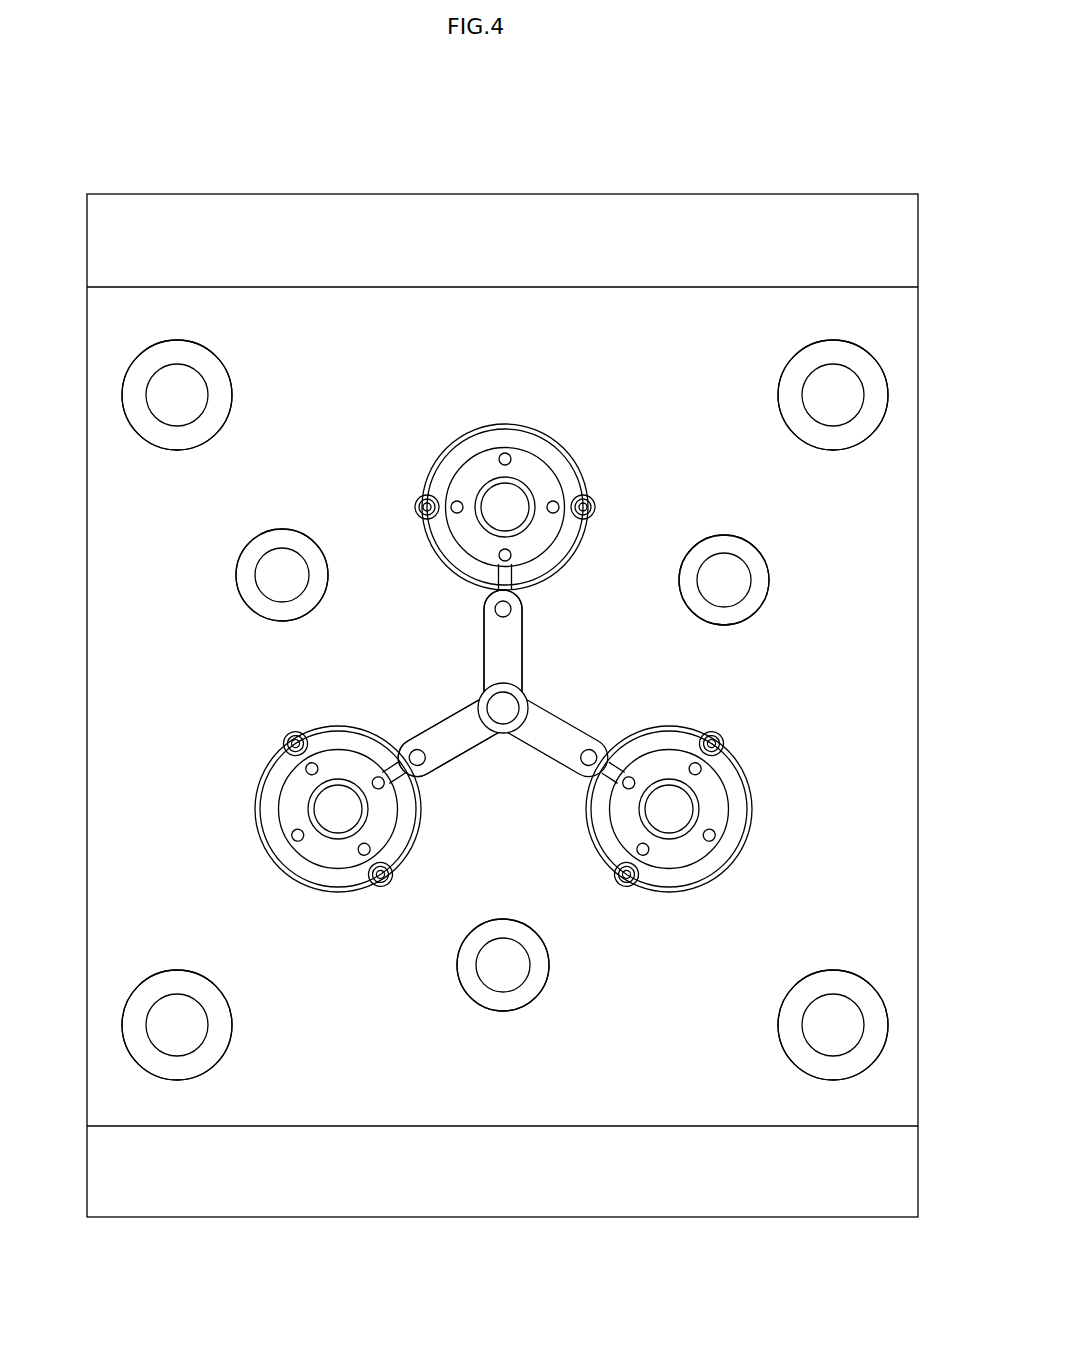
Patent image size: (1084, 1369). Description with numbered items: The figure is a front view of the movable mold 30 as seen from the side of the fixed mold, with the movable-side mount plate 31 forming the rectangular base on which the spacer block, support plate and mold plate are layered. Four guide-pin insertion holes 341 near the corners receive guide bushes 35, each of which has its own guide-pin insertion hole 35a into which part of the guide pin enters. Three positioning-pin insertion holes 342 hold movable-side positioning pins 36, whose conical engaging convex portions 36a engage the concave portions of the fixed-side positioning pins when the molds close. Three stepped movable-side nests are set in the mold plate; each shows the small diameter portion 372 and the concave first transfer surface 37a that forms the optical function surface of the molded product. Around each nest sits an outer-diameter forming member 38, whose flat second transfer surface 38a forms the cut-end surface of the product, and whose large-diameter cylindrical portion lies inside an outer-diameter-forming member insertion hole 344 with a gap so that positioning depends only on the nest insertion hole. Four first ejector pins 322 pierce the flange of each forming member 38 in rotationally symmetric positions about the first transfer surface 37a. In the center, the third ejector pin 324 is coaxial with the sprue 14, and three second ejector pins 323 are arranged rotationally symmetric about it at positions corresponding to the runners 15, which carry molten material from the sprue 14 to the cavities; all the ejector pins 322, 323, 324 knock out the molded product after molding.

The movable mold 30 is at (866, 143).
The movable-side mount plate 31 is at (548, 194).
The sprue 14 is at (480, 705).
The runner 15 is at (462, 745).
The guide bush 35 is at (140, 353).
The guide-pin insertion hole 35a is at (154, 414).
The guide-pin insertion hole 341 is at (167, 449).
The positioning-pin insertion hole 342 is at (269, 539).
The movable-side positioning pin 36 is at (243, 550).
The engaging convex portion 36a is at (264, 589).
The first transfer surface 37a is at (479, 503).
The small diameter portion 372 is at (479, 484).
The outer-diameter forming member 38 is at (472, 465).
The second transfer surface 38a is at (494, 455).
The first ejector pin 322 is at (525, 455).
The second ejector pin 323 is at (520, 607).
The third ejector pin 324 is at (483, 700).
The outer-diameter-forming member insertion hole 344 is at (571, 456).